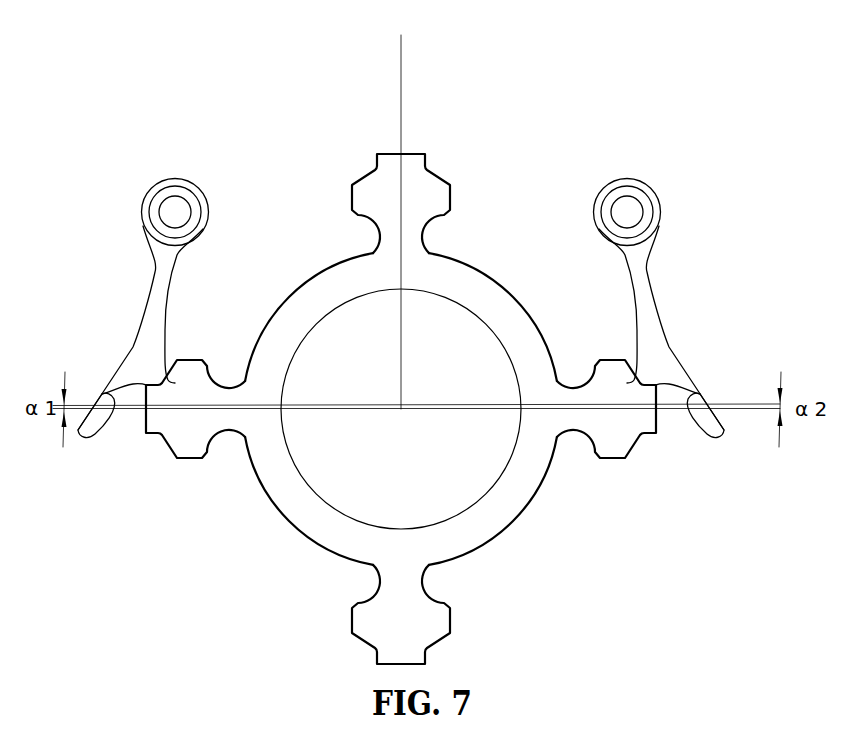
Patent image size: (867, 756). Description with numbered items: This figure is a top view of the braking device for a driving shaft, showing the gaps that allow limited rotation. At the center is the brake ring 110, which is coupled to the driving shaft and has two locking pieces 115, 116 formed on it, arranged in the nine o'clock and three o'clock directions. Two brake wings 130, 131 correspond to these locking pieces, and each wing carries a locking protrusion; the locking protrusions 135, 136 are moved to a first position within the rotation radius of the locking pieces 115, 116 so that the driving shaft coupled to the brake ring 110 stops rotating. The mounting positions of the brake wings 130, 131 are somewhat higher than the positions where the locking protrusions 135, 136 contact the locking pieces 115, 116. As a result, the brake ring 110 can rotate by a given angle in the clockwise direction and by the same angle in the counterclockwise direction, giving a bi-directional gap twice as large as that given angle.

The brake ring 110 is at (495, 522).
The locking piece 115 is at (187, 445).
The locking piece 116 is at (613, 440).
The brake wing 130 is at (160, 273).
The brake wing 131 is at (652, 297).
The locking protrusion 135 is at (150, 370).
The locking protrusion 136 is at (647, 372).